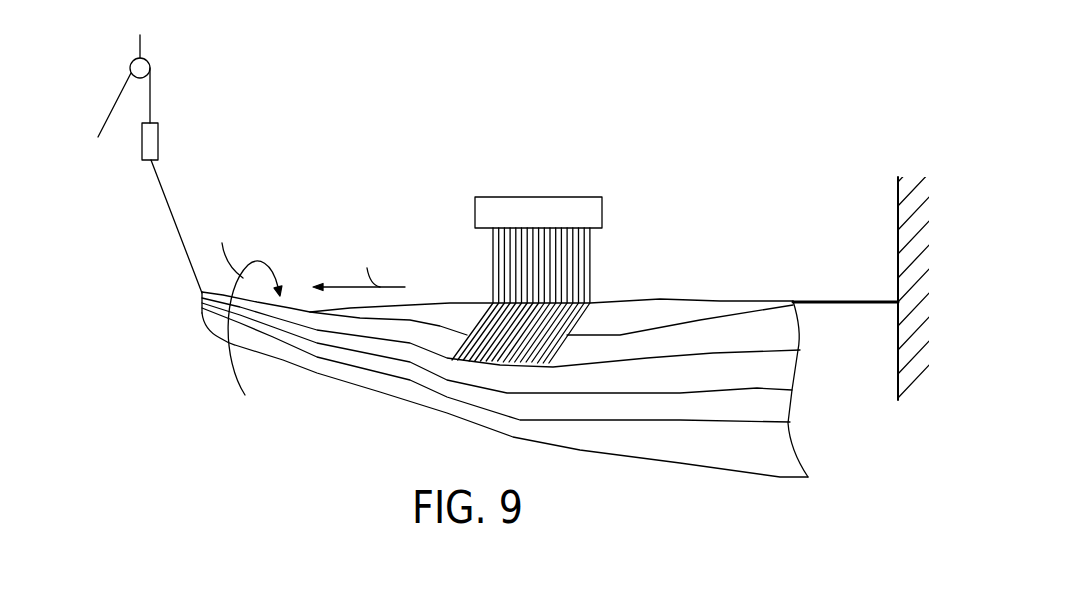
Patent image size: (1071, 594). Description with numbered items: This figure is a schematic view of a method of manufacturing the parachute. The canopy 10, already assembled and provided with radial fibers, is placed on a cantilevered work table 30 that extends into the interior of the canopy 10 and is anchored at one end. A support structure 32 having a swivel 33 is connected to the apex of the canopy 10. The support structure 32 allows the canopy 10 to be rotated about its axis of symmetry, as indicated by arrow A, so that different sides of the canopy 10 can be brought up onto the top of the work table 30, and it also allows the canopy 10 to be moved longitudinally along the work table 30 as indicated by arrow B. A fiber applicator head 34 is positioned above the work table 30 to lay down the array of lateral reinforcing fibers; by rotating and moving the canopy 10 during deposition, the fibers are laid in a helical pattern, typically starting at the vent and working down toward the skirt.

The canopy 10 is at (505, 347).
The cantilevered work table 30 is at (862, 273).
The support structure 32 is at (118, 78).
The swivel 33 is at (153, 137).
The fiber applicator head 34 is at (538, 208).